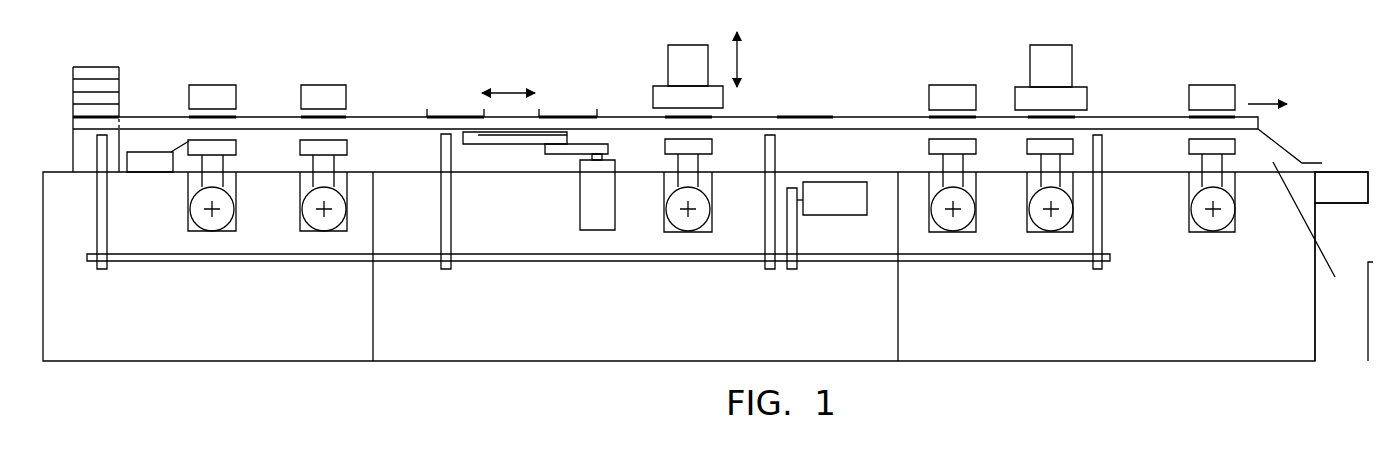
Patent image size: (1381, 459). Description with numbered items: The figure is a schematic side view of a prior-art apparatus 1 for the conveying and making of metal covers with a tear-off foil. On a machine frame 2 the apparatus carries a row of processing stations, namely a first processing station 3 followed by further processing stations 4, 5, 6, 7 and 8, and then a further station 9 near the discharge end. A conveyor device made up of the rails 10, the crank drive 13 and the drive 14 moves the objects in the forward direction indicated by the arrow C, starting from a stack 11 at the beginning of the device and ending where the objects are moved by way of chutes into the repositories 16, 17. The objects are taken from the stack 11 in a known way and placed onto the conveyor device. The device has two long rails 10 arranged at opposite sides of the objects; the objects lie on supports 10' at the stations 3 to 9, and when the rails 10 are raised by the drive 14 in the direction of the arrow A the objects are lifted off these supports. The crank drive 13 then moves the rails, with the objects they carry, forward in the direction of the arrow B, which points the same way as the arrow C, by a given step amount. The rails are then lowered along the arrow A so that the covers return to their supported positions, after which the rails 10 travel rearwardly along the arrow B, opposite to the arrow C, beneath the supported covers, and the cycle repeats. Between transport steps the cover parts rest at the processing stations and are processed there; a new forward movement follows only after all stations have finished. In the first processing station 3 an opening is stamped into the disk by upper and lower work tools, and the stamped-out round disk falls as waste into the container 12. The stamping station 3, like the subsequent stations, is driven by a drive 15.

The apparatus 1 is at (472, 373).
The machine frame 2 is at (330, 347).
The first processing station 3 is at (203, 95).
The processing station 4 is at (318, 92).
The processing station 5 is at (660, 93).
The processing station 6 is at (683, 50).
The processing station 7 is at (943, 92).
The processing station 8 is at (1027, 88).
The further station 9 is at (1200, 97).
The rails 10 is at (697, 119).
The supports 10' is at (636, 86).
The stack 11 is at (97, 82).
The container 12 is at (150, 158).
The crank drive 13 is at (593, 212).
The drive 14 is at (845, 190).
The drive 15 is at (197, 217).
The repository 16 is at (1338, 173).
The repository 17 is at (1340, 350).
The direction of vertical movement A is at (750, 59).
The direction of rail movement B is at (508, 79).
The forward direction C is at (1267, 90).